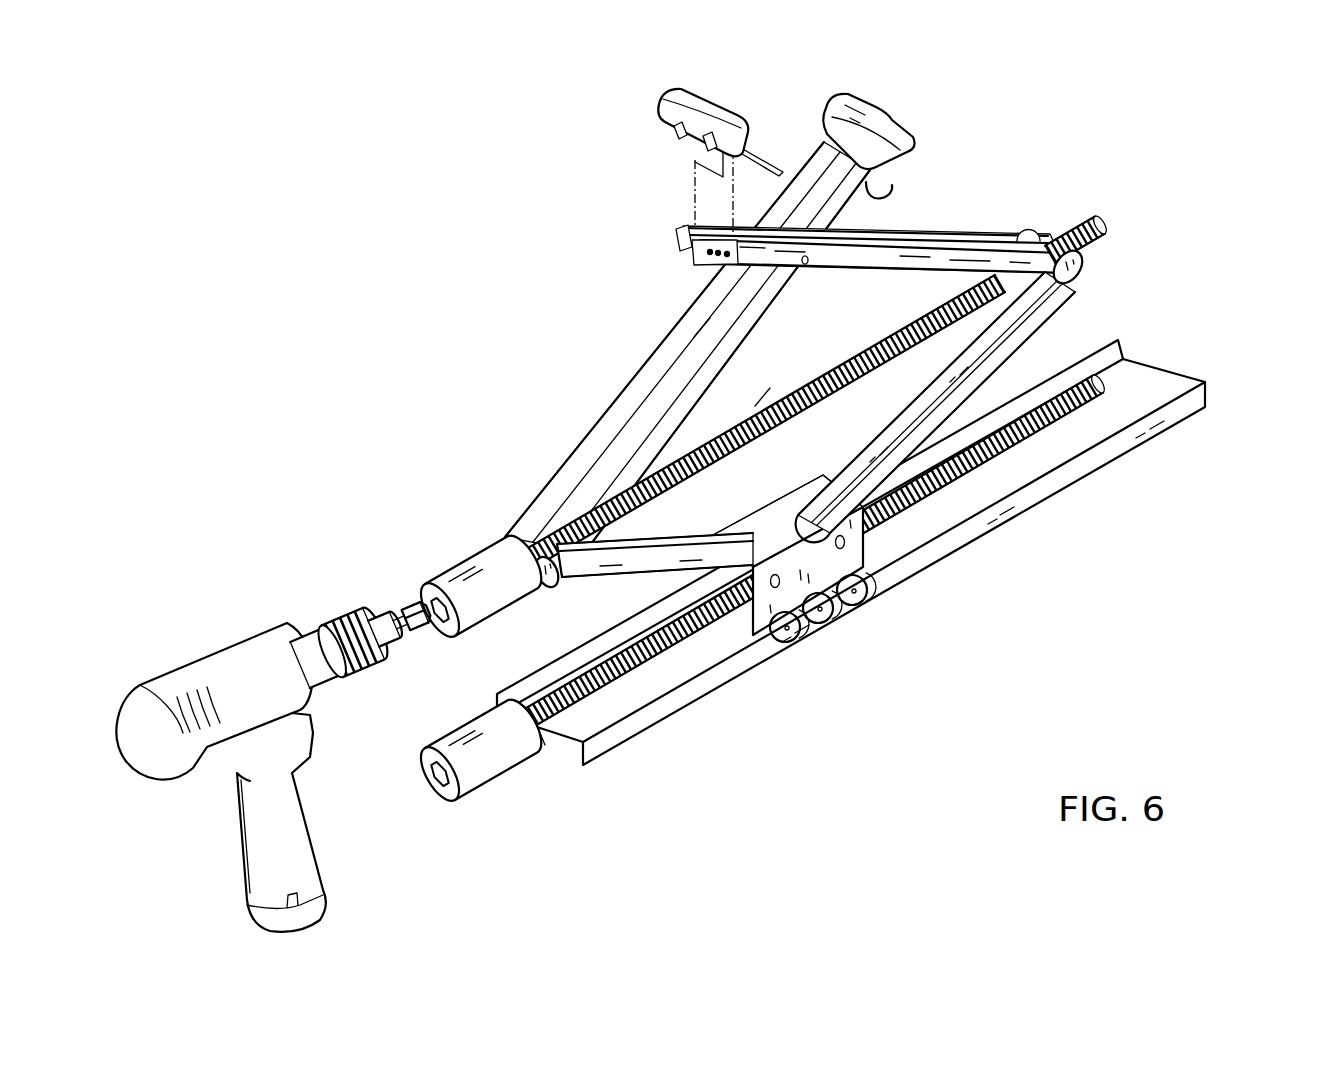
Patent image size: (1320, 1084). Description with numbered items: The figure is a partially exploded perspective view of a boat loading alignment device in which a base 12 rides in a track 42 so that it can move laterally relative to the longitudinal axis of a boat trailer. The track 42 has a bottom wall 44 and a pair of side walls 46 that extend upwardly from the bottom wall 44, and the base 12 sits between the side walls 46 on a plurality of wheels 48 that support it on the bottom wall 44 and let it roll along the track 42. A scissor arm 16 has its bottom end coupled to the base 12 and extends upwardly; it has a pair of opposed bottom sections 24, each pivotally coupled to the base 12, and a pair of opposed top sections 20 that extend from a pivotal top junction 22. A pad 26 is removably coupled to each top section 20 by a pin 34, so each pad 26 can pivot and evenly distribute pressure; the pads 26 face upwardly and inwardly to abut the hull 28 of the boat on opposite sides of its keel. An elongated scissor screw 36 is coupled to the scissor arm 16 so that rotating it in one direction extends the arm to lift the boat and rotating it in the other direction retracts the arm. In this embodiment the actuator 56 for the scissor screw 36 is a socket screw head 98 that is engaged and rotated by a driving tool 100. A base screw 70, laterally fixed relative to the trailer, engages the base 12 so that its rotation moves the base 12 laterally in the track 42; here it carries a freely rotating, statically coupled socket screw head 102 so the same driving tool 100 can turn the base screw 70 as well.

The base 12 is at (770, 522).
The scissor arm 16 is at (875, 235).
The top sections 20 is at (712, 265).
The pivotal top junction 22 is at (806, 265).
The bottom sections 24 is at (1003, 346).
The pads 26 is at (697, 93).
The hull 28 is at (893, 197).
The pins 34 is at (762, 166).
The scissor screw 36 is at (788, 398).
The track 42 is at (898, 510).
The bottom wall 44 is at (1157, 384).
The side walls 46 is at (1118, 341).
The wheels 48 is at (875, 613).
The actuator 56 is at (423, 564).
The base screw 70 is at (544, 724).
The socket screw head 98 is at (470, 568).
The driving tool 100 is at (235, 655).
The socket screw head 102 is at (492, 761).